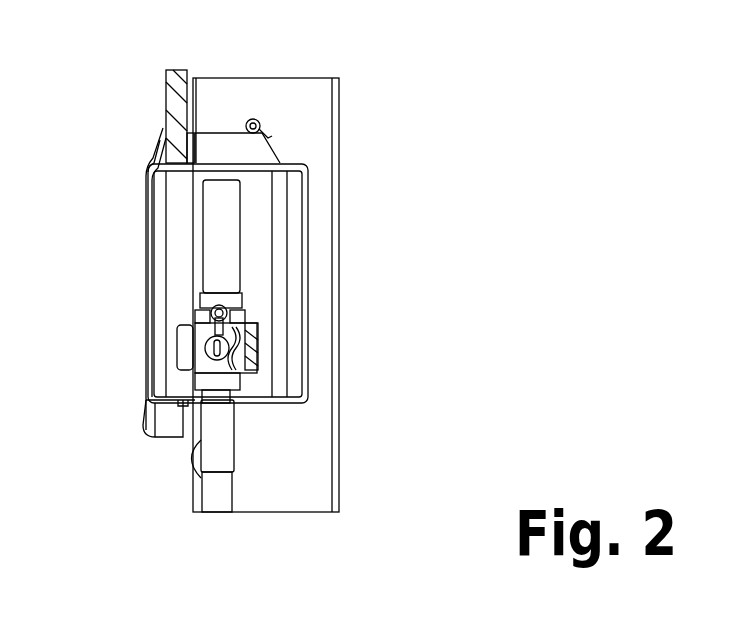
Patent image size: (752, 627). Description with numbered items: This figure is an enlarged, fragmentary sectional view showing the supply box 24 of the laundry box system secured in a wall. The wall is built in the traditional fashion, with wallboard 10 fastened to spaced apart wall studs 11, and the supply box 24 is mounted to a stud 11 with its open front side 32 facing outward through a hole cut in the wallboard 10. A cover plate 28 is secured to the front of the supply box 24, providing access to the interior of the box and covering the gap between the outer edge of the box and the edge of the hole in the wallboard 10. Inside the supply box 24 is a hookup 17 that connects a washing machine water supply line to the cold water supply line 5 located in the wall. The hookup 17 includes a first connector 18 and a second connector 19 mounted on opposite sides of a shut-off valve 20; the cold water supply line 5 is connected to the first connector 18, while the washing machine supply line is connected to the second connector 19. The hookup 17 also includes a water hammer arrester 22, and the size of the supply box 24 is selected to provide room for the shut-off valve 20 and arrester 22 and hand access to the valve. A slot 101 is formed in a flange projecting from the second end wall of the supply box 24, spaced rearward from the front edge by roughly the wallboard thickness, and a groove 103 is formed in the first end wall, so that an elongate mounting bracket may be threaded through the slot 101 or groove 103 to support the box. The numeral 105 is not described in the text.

The cold water supply line 5 is at (220, 495).
The wallboard 10 is at (173, 113).
The wall stud 11 is at (327, 133).
The hookup 17 is at (250, 340).
The first connector 18 is at (220, 435).
The second connector 19 is at (183, 335).
The shut-off valve 20 is at (247, 333).
The water hammer arrester 22 is at (222, 232).
The supply box 24 is at (302, 152).
The cover plate 28 is at (120, 262).
The open front side 32 is at (148, 172).
The slot 101 is at (195, 133).
The groove 103 is at (183, 403).
The spacer 105 is at (187, 138).